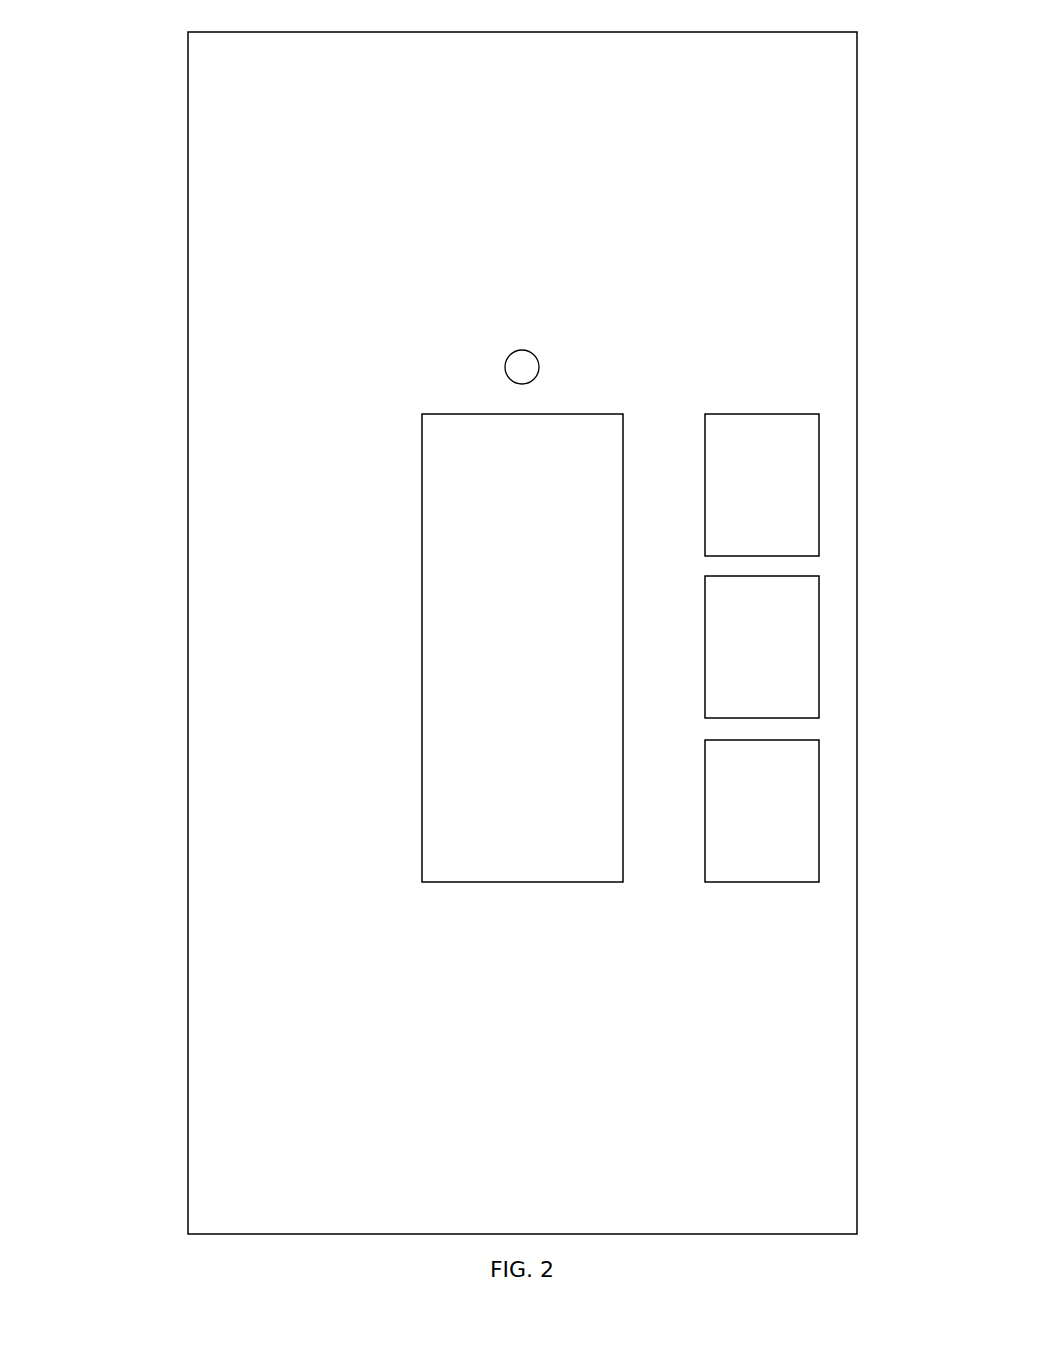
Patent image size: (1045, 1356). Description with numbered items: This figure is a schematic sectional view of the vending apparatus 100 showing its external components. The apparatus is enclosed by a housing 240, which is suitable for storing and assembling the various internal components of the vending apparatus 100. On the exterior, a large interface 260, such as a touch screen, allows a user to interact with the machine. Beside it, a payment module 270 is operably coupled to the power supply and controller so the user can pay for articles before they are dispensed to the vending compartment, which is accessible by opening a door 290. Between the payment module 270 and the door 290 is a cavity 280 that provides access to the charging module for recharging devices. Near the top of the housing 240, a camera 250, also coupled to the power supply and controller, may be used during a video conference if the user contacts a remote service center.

The vending apparatus 100 is at (122, 61).
The housing 240 is at (857, 277).
The camera 250 is at (508, 353).
The interface 260 is at (506, 657).
The payment module 270 is at (745, 496).
The cavity 280 is at (745, 658).
The door 290 is at (745, 820).